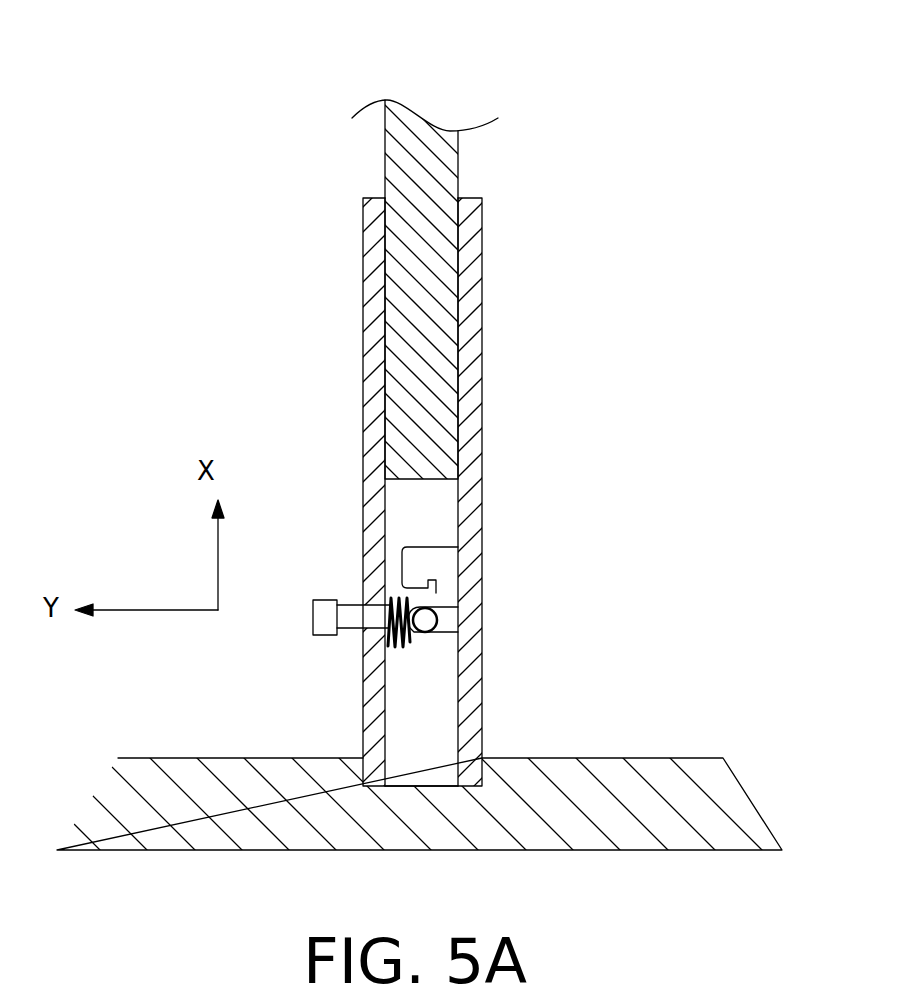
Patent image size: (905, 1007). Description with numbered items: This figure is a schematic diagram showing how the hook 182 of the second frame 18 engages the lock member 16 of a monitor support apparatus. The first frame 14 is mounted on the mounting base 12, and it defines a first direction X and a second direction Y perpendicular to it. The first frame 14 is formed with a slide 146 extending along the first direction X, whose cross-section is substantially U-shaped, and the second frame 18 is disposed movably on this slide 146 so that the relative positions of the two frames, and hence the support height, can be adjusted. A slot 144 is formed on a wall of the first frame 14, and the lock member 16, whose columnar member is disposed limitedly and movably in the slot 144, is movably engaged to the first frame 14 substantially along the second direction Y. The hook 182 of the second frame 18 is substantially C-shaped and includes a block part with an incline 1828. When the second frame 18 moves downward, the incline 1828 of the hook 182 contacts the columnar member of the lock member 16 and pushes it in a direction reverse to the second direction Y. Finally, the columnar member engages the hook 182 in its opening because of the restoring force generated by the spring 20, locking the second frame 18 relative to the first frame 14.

The mounting base 12 is at (655, 768).
The first frame 14 is at (475, 408).
The lock member 16 is at (348, 608).
The second frame 18 is at (410, 118).
The spring 20 is at (363, 672).
The slot 144 is at (448, 625).
The slide 146 is at (420, 740).
The hook 182 is at (407, 588).
The incline 1828 is at (430, 602).